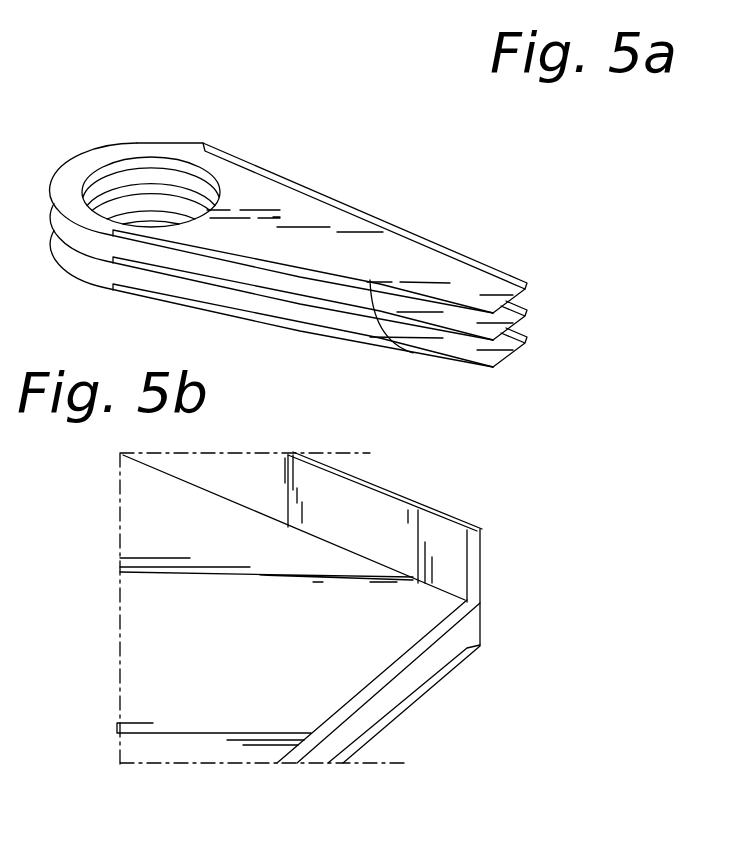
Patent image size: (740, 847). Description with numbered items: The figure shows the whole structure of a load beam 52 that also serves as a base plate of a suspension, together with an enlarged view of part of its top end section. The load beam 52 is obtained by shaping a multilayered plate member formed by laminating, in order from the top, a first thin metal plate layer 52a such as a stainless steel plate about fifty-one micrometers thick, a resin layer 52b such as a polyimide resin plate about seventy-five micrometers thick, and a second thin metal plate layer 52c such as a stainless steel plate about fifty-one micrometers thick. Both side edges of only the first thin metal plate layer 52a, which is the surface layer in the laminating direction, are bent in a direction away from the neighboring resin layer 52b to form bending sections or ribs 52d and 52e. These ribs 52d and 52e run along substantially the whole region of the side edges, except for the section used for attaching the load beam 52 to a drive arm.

In FIG. 5A, the load beam 52 is at (324, 150).
In FIG. 5A, the first thin metal plate layer 52a is at (452, 272).
In FIG. 5B, the first thin metal plate layer 52a is at (340, 722).
In FIG. 5A, the resin layer 52b is at (523, 313).
In FIG. 5B, the resin layer 52b is at (388, 700).
In FIG. 5A, the second thin metal plate layer 52c is at (522, 343).
In FIG. 5B, the second thin metal plate layer 52c is at (447, 670).
In FIG. 5A, the rib 52d is at (420, 237).
In FIG. 5B, the rib 52d is at (447, 568).
In FIG. 5A, the rib 52e is at (413, 353).